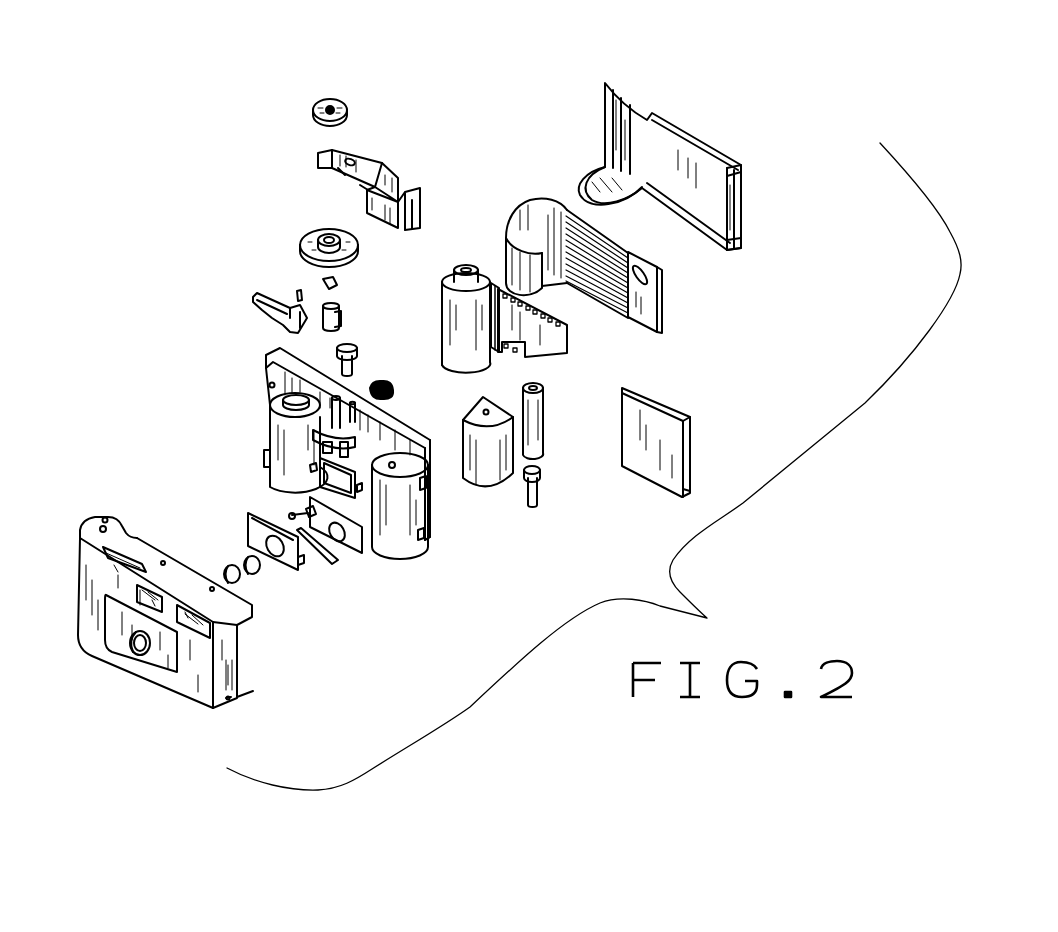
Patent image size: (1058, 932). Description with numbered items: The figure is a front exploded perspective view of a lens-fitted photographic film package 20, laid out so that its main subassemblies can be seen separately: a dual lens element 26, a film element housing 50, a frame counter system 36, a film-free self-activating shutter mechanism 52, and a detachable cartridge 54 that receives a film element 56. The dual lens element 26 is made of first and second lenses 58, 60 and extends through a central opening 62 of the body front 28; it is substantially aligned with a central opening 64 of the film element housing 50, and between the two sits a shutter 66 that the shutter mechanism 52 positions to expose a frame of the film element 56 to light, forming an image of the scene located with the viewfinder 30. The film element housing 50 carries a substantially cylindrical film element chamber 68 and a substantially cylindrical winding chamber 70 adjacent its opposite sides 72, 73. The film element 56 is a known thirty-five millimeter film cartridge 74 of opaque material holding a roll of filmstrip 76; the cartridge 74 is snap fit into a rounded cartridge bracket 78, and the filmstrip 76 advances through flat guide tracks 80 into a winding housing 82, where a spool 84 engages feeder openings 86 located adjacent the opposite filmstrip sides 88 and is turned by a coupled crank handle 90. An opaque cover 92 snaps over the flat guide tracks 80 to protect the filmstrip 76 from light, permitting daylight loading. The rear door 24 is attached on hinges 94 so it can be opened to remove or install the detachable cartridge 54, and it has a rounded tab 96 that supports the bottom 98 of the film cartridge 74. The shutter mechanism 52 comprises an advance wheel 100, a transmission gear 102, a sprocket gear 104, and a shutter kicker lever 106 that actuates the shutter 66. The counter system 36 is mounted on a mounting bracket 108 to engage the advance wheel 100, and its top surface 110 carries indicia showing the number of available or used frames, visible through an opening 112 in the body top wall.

The lens-fitted photographic film package 20 is at (654, 46).
The rear door 24 is at (690, 146).
The dual lens element 26 is at (217, 514).
The body front 28 is at (188, 680).
The viewfinder 30 is at (162, 596).
The frame counter system 36 is at (330, 86).
The film element housing 50 is at (247, 371).
The film-free self-activating shutter mechanism 52 is at (262, 238).
The detachable cartridge 54 is at (500, 160).
The film element 56 is at (450, 250).
The first lens 58 is at (245, 588).
The second lens 60 is at (262, 578).
The central opening of body front 62 is at (138, 648).
The central opening of film element housing 64 is at (333, 475).
The shutter 66 is at (374, 567).
The film element chamber 68 is at (287, 475).
The winding chamber 70 is at (402, 530).
The side of film element housing 72 is at (267, 440).
The side of film element housing 73 is at (438, 527).
The film cartridge 74 is at (453, 316).
The filmstrip 76 is at (555, 338).
The rounded cartridge bracket 78 is at (537, 210).
The flat guide tracks 80 is at (617, 240).
The winding housing 82 is at (491, 472).
The spool 84 is at (545, 438).
The feeder openings 86 is at (536, 293).
The filmstrip sides 88 is at (498, 282).
The crank handle 90 is at (537, 490).
The opaque cover 92 is at (656, 460).
The hinges 94 is at (745, 212).
The rounded tab 96 is at (606, 170).
The bottom of film element cartridge 98 is at (446, 371).
The advance wheel 100 is at (328, 228).
The transmission gear 102 is at (341, 307).
The sprocket gear 104 is at (347, 350).
The shutter kicker lever 106 is at (256, 300).
The mounting bracket 108 is at (375, 160).
The top surface of counter system 110 is at (330, 121).
The opening in body top wall 112 is at (106, 517).